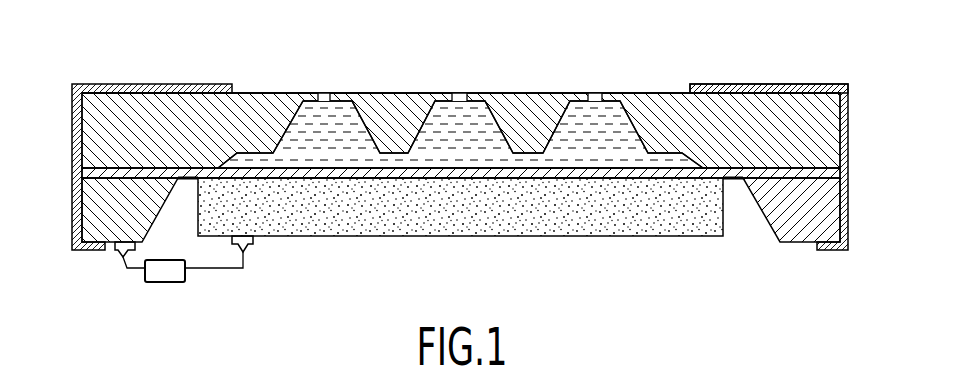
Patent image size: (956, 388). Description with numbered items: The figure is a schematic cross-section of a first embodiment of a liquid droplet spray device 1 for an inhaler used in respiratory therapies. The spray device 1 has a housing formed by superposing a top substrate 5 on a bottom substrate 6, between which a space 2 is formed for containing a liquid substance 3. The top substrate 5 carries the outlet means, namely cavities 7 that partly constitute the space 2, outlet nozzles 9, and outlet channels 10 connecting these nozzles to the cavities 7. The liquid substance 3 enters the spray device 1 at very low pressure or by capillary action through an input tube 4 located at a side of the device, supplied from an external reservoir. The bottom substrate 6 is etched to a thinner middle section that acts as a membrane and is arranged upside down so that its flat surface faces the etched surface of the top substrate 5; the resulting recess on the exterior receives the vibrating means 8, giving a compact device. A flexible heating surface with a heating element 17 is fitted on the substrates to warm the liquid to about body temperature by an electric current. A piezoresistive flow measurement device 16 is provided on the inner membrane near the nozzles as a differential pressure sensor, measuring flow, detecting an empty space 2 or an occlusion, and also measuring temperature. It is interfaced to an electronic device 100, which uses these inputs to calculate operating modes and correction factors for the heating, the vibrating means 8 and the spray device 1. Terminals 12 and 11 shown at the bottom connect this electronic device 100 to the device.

The liquid droplet spray device 1 is at (650, 80).
The space 2 is at (308, 142).
The liquid substance 3 is at (596, 142).
The input tube 4 is at (773, 113).
The top substrate 5 is at (390, 93).
The bottom substrate 6 is at (793, 242).
The cavities 7 is at (457, 112).
The vibrating means 8 is at (498, 228).
The outlet nozzles 9 is at (327, 93).
The outlet channels 10 is at (462, 93).
The electrode terminal 11 is at (243, 252).
The electrode terminal 12 is at (123, 257).
The piezoresistive flow measurement device 16 is at (312, 93).
The heating element 17 is at (163, 84).
The electronic device 100 is at (162, 282).